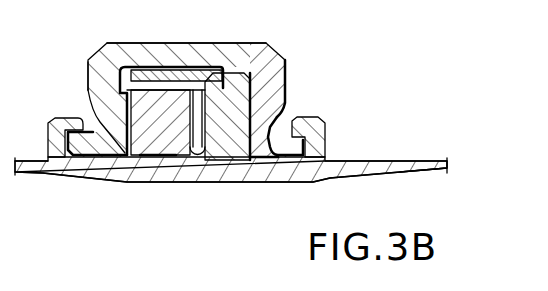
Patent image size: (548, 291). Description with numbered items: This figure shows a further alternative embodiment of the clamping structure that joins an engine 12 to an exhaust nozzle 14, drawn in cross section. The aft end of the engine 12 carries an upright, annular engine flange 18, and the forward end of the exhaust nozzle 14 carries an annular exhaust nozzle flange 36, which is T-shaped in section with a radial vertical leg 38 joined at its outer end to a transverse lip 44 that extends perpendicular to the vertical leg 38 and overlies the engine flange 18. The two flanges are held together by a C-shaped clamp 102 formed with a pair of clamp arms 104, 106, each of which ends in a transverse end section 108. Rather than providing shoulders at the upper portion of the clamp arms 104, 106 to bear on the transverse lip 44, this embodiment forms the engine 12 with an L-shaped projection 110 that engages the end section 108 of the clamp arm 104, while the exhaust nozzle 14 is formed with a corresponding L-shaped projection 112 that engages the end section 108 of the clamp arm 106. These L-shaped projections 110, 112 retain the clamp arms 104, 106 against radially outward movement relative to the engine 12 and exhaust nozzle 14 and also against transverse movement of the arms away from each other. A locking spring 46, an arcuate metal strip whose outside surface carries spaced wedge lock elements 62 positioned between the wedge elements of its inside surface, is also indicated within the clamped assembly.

The engine 12 is at (32, 177).
The exhaust nozzle 14 is at (420, 178).
The engine flange 18 is at (215, 158).
The exhaust nozzle flange 36 is at (276, 116).
The vertical leg 38 is at (250, 125).
The transverse lip 44 is at (176, 75).
The locking spring 46 is at (155, 104).
The wedge lock elements 62 is at (112, 95).
The C-shaped clamp 102 is at (294, 55).
The clamp arm 104 is at (88, 88).
The clamp arm 106 is at (290, 63).
The transverse end section 108 is at (100, 145).
The L-shaped projection 110 is at (47, 137).
The L-shaped projection 112 is at (327, 127).